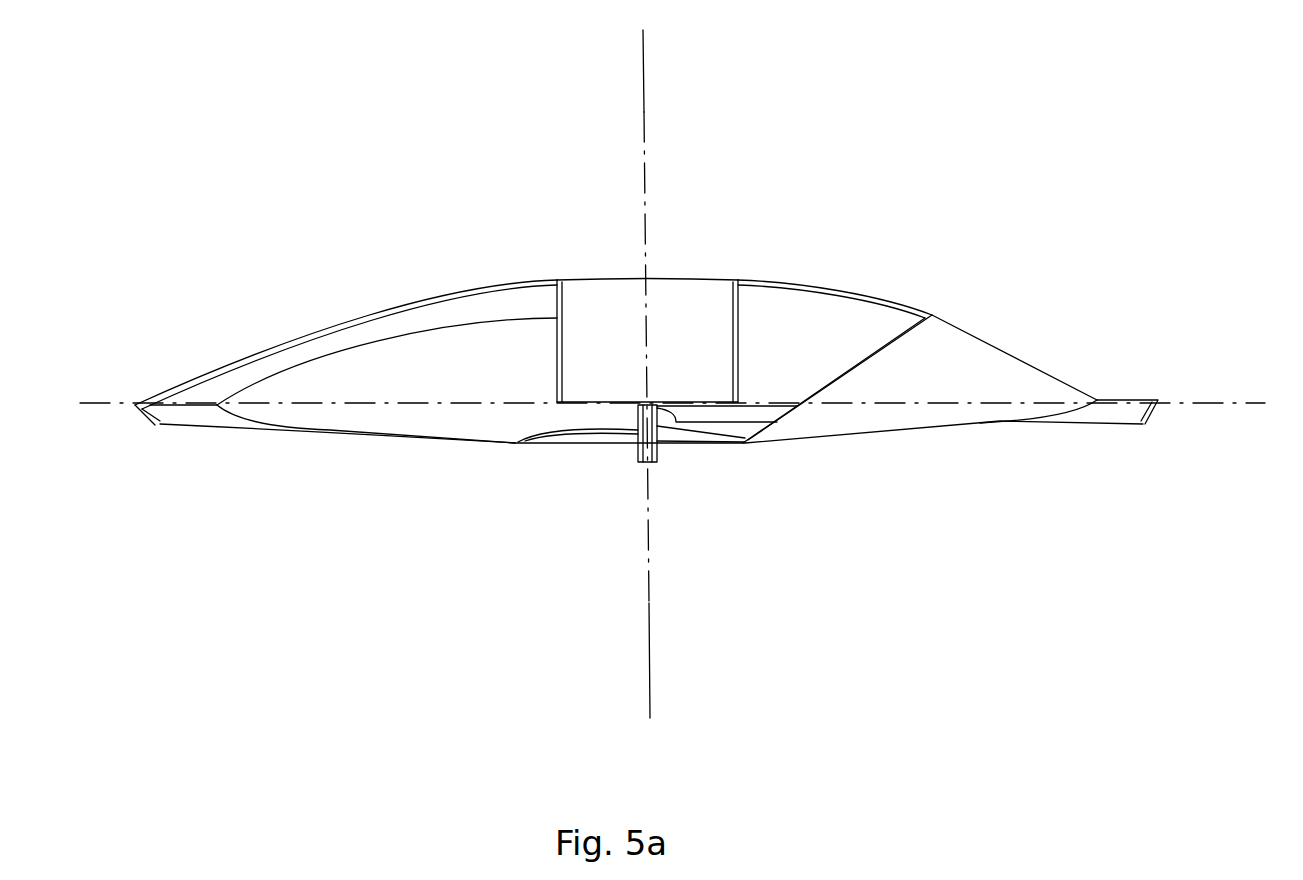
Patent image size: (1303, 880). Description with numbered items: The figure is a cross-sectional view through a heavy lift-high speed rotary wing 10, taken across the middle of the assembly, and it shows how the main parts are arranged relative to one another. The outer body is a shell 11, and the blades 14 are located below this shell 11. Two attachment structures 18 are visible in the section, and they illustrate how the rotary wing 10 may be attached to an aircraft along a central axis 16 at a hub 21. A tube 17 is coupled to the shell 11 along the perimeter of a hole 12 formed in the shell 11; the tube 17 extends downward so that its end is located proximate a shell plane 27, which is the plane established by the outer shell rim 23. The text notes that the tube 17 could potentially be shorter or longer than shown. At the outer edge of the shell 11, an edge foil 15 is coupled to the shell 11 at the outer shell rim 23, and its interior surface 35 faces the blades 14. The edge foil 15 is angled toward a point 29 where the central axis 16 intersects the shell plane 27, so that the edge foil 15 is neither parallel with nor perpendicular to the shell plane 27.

The heavy lift-high speed rotary wing 10 is at (1035, 110).
The shell 11 is at (396, 300).
The hole 12 is at (680, 278).
The blades 14 is at (425, 395).
The edge foil 15 is at (212, 430).
The central axis 16 is at (648, 97).
The tube 17 is at (704, 342).
The attachment structures 18 is at (577, 447).
The hub 21 is at (640, 465).
The outer shell rim 23 is at (180, 405).
The shell plane 27 is at (1193, 398).
The point 29 is at (643, 400).
The interior surface 35 is at (163, 415).